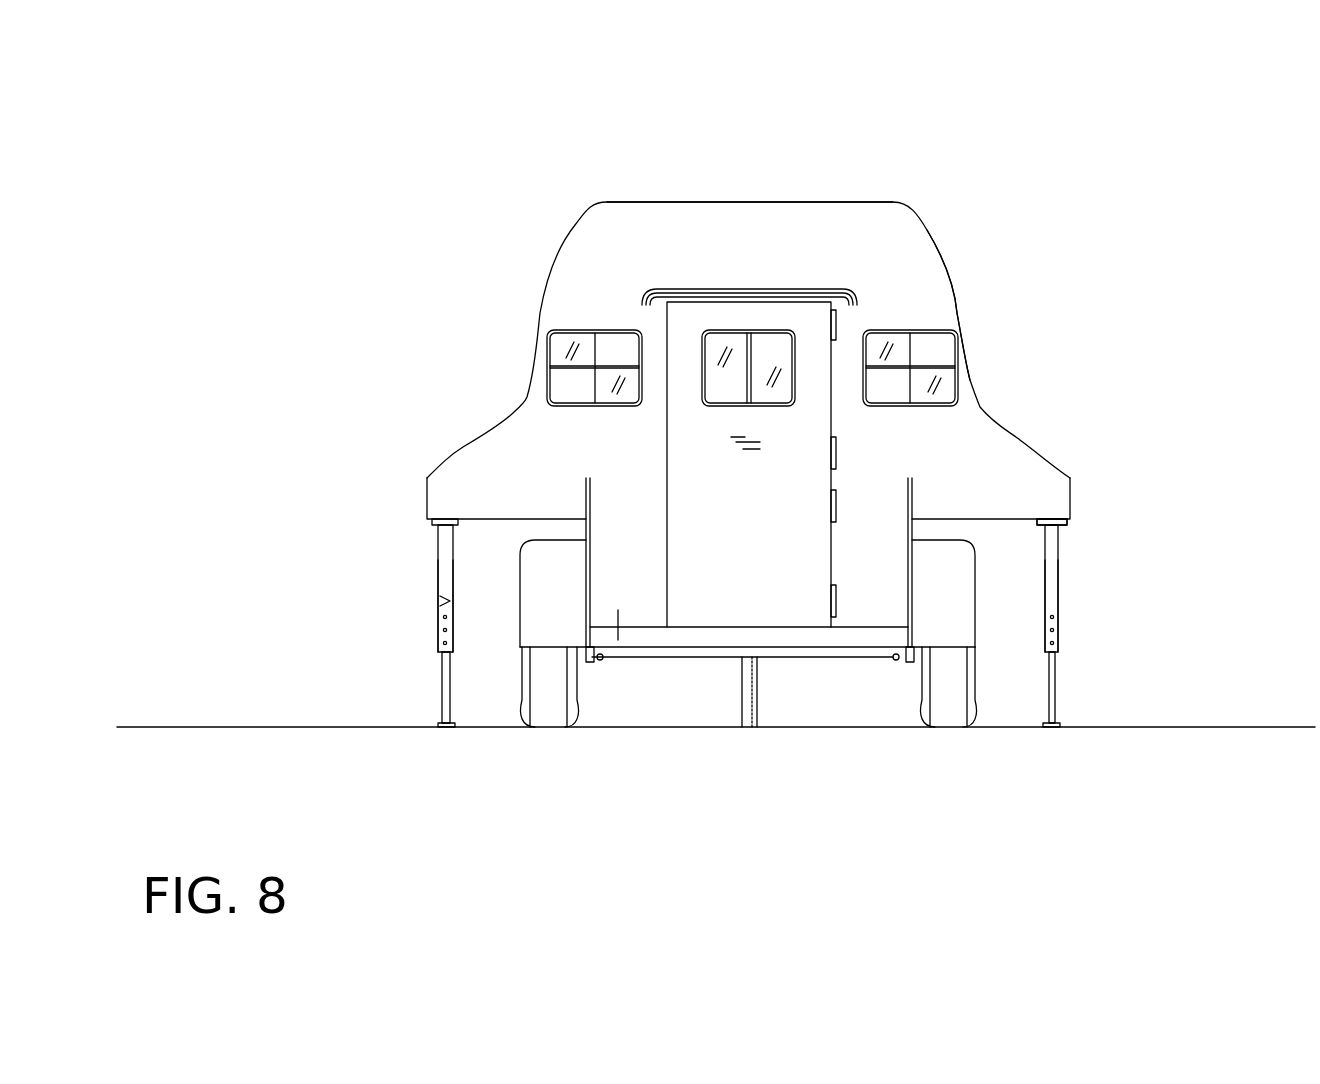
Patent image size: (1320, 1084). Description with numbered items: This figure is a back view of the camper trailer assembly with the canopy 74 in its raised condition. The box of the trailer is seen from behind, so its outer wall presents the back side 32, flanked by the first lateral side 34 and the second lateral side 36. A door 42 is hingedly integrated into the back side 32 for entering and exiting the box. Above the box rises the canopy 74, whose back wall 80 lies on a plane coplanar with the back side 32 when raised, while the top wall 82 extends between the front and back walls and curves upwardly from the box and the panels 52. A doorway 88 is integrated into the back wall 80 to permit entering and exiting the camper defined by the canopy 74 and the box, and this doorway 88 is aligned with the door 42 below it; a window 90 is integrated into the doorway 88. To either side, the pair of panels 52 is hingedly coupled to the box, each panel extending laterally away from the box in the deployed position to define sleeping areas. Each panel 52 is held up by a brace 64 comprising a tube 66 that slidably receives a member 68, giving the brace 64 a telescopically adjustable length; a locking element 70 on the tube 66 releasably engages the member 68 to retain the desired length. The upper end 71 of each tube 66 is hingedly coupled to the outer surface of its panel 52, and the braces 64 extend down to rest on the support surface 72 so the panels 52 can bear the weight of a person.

The back side 32 is at (878, 592).
The first lateral side 34 is at (587, 588).
The second lateral side 36 is at (908, 577).
The door 42 is at (790, 580).
The panels 52 is at (427, 478).
The braces 64 is at (438, 537).
The tube 66 is at (438, 567).
The member 68 is at (442, 702).
The locking element 70 is at (438, 593).
The upper end 71 is at (1045, 517).
The support surface 72 is at (137, 727).
The canopy 74 is at (612, 202).
The back wall 80 is at (920, 250).
The top wall 82 is at (862, 202).
The doorway 88 is at (805, 315).
The window 90 is at (720, 330).